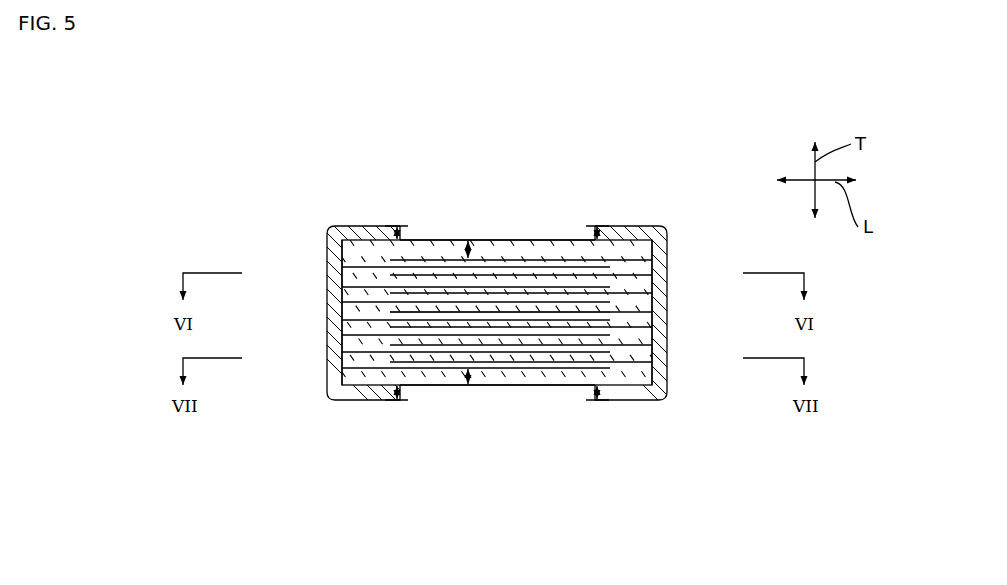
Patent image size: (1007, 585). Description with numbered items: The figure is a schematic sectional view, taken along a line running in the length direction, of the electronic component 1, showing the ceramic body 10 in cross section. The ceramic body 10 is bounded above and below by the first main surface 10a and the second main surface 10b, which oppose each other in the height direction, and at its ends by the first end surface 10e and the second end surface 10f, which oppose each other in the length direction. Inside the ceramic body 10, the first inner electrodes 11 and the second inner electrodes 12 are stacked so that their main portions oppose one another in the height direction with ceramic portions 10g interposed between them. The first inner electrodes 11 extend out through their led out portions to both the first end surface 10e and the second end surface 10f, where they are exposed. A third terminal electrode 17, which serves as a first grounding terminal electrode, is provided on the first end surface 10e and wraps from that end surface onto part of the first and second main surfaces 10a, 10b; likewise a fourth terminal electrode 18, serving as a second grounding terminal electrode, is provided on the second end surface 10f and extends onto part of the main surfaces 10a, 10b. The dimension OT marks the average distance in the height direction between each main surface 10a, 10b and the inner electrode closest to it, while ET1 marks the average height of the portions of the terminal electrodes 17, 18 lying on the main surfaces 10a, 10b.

The multilayer ceramic capacitor 1 is at (651, 208).
The ceramic body 10 is at (554, 239).
The first main surface 10a is at (425, 240).
The second main surface 10b is at (453, 385).
The first end surface 10e is at (341, 364).
The second end surface 10f is at (653, 364).
The ceramic portion 10g is at (499, 360).
The first inner electrode 11 is at (435, 358).
The second inner electrode 12 is at (541, 358).
The third terminal electrode 17 is at (325, 292).
The fourth terminal electrode 18 is at (668, 268).
The average height dimension of terminal electrode portions on main surfaces ET1 is at (393, 228).
The average outer layer distance OT is at (474, 243).